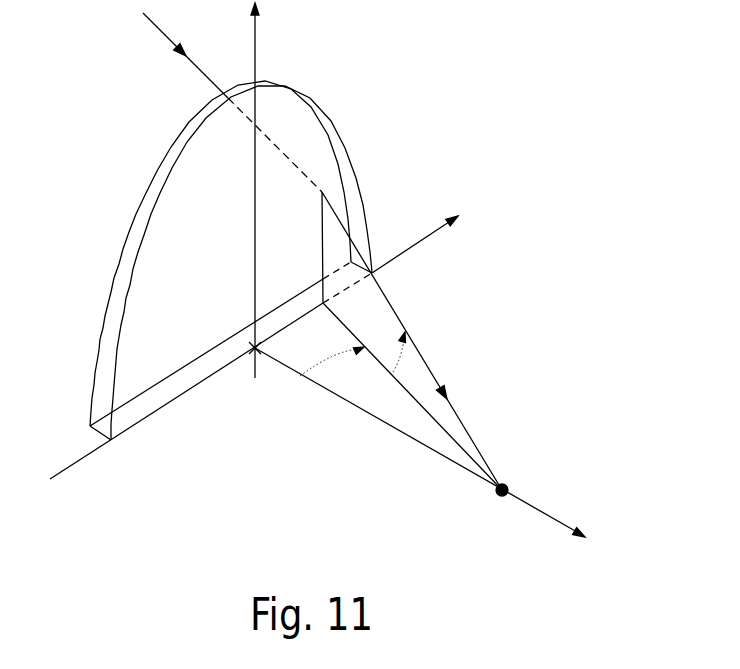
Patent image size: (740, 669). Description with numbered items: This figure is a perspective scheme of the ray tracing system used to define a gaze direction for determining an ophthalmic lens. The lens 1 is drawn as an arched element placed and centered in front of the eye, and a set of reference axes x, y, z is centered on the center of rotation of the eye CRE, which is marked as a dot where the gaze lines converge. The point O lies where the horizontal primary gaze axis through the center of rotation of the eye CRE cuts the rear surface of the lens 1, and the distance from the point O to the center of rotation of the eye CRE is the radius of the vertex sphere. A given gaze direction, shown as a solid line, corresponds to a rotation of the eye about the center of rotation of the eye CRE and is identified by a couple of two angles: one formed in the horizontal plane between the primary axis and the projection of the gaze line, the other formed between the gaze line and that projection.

The arcuate (half-cylindrical) optical shell element 1 is at (118, 277).
The intersection point of lens rear surface and primary gaze axis O is at (254, 364).
The x axis x is at (266, 347).
The y axis y is at (264, 189).
The z axis z is at (430, 453).
The center of rotation of the eye CRE is at (528, 481).